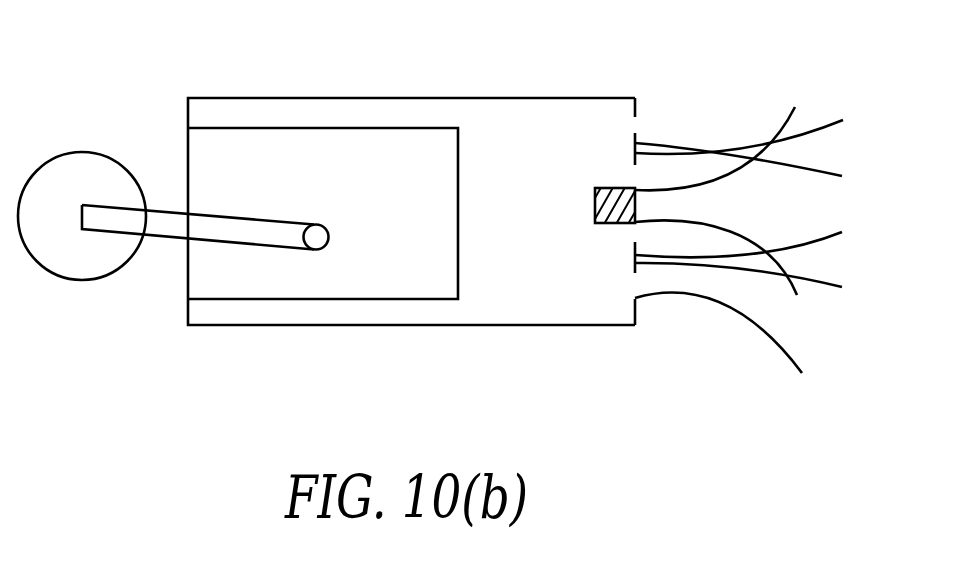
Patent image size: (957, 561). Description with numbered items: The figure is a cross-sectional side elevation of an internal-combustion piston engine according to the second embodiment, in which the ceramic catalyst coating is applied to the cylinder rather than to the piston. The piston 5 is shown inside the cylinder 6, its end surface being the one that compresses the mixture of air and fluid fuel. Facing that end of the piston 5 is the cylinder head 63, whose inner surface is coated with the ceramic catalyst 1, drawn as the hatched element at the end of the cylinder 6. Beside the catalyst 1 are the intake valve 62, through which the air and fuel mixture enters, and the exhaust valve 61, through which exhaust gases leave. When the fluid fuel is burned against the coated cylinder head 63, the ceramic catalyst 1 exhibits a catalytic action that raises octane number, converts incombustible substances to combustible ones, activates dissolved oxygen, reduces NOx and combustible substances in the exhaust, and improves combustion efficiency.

The ceramic catalyst 1 is at (595, 192).
The piston 5 is at (337, 147).
The housing 6 is at (513, 325).
The exhaust valve 61 is at (635, 264).
The intake valve 62 is at (635, 148).
The cylinder head 63 is at (620, 223).